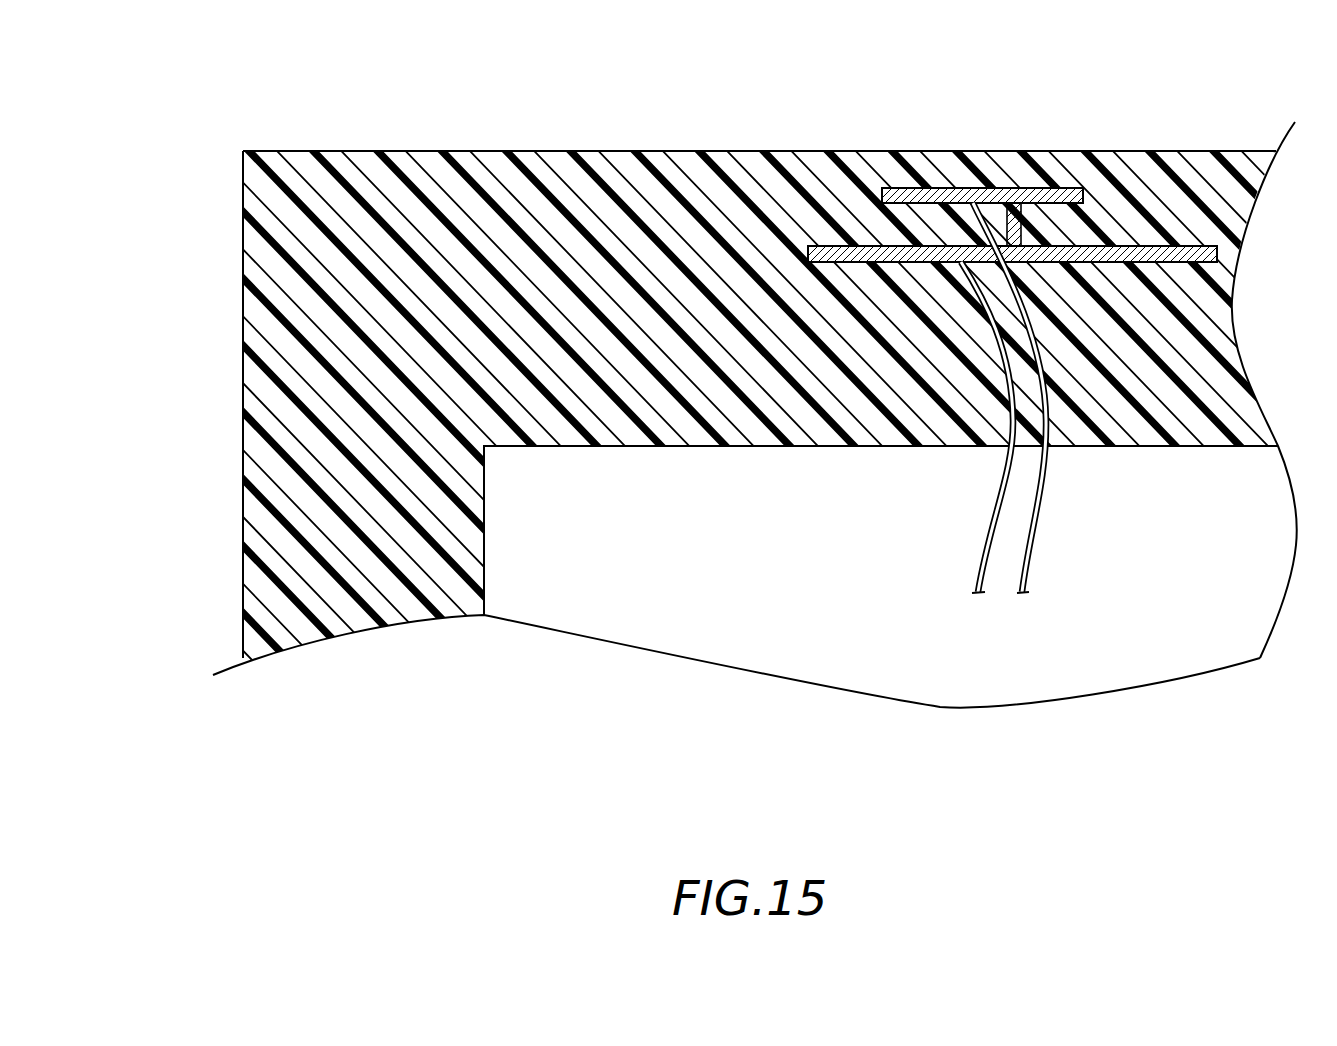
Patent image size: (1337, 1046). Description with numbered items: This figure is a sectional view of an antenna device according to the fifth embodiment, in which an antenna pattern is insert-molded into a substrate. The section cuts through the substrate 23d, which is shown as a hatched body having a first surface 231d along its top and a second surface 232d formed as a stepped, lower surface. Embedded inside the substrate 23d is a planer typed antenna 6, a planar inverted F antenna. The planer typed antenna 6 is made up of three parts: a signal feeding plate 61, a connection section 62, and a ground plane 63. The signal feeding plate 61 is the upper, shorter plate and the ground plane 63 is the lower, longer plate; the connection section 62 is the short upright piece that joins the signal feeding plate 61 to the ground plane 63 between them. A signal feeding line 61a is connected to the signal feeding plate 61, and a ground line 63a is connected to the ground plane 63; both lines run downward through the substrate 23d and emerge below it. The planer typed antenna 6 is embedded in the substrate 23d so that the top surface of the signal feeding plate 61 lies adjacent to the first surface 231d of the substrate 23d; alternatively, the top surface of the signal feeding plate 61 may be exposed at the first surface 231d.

The planer typed antenna 6 is at (1012, 307).
The signal feeding plate 61 is at (937, 188).
The signal feeding line 61a is at (1046, 500).
The connection section 62 is at (1024, 211).
The ground plane 63 is at (858, 245).
The ground line 63a is at (1001, 482).
The substrate 23d is at (256, 383).
The first surface 231d is at (385, 150).
The second surface 232d is at (555, 446).